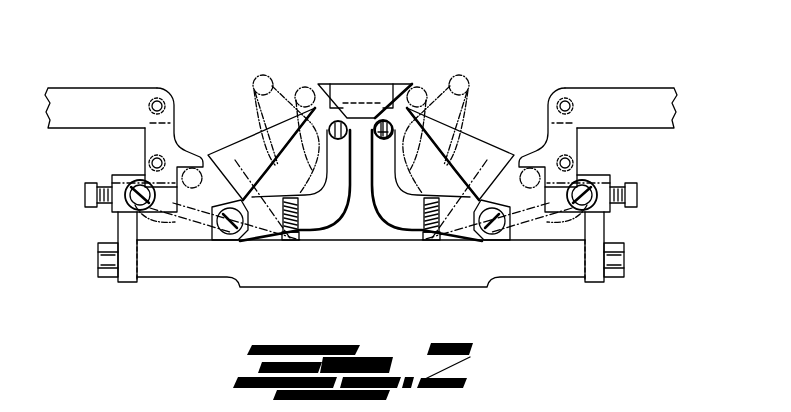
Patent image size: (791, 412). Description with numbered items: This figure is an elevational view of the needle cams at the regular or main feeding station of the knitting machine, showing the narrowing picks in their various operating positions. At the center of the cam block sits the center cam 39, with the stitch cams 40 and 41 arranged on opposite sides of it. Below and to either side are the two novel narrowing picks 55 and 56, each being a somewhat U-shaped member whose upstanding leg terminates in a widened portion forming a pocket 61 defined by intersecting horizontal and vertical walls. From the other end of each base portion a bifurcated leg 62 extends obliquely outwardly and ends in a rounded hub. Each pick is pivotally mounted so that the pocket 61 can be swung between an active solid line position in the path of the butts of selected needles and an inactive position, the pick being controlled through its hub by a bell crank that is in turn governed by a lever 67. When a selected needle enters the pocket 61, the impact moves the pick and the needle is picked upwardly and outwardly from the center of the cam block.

The center cam 39 is at (368, 88).
The stitch cam 40 is at (238, 145).
The stitch cam 41 is at (478, 145).
The narrowing pick 55 is at (283, 212).
The narrowing pick 56 is at (420, 212).
The pocket 61 is at (382, 134).
The bifurcated leg 62 is at (573, 137).
The lever 67 is at (653, 93).